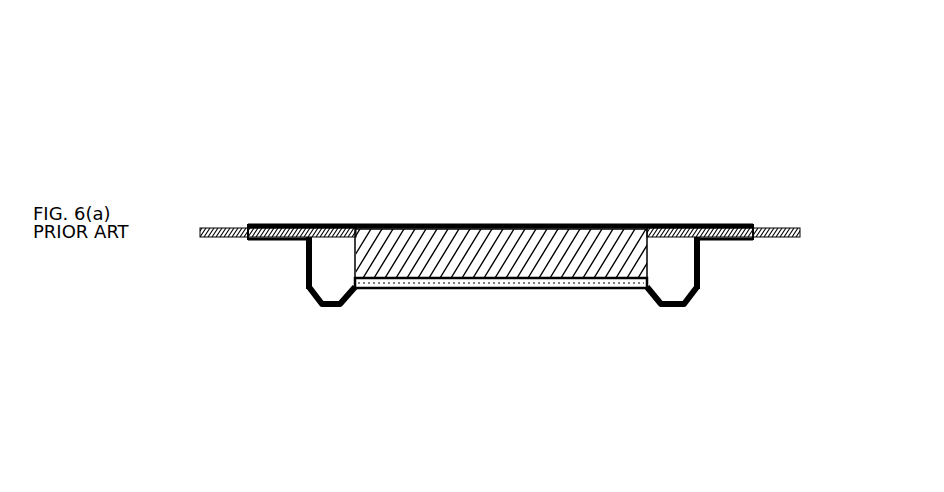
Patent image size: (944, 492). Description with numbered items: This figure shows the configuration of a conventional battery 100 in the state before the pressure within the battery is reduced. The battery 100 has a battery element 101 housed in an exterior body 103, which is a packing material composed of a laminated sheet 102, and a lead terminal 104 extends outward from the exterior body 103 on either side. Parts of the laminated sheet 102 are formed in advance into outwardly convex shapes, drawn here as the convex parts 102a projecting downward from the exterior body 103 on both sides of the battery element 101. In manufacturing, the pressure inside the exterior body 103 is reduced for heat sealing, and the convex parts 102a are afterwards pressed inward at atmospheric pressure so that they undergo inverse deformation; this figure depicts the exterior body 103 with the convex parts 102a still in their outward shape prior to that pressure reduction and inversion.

The battery 100 is at (499, 218).
The battery element 101 is at (354, 253).
The laminated sheet 102 is at (500, 323).
The convex parts 102a is at (331, 307).
The exterior body 103 is at (435, 288).
The lead terminal 104 is at (230, 226).